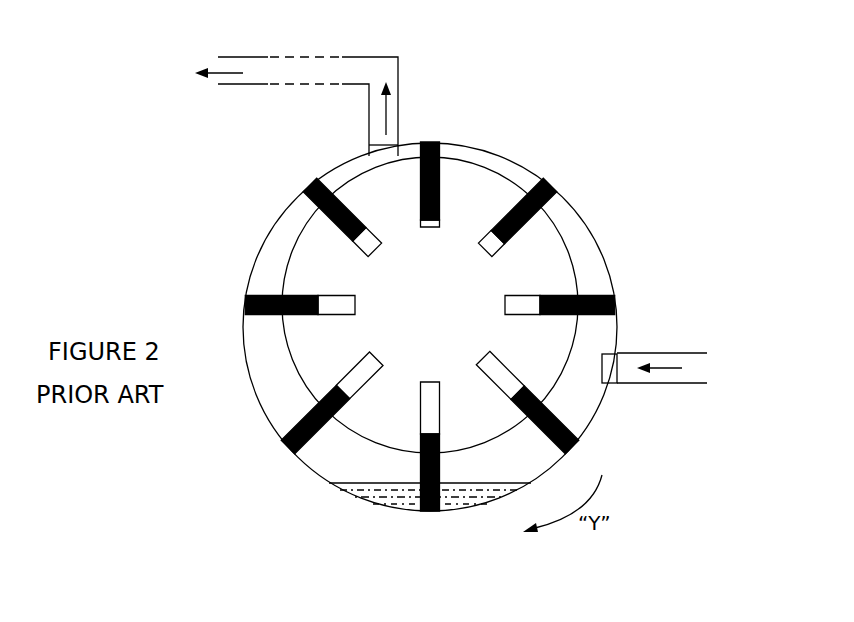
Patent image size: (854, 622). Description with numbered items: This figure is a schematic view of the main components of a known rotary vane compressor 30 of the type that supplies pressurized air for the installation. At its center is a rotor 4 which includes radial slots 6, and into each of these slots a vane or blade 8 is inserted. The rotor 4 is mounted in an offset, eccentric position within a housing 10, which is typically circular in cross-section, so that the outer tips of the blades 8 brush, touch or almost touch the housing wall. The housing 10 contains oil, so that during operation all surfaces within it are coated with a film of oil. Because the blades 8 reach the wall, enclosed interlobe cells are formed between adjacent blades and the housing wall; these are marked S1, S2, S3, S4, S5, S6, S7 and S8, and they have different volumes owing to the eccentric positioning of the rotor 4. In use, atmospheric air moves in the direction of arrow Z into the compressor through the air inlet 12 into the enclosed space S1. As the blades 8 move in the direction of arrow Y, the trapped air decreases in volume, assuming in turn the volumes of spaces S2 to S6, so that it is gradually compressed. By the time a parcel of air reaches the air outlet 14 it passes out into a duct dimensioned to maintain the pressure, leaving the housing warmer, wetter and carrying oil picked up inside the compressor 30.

The rotary vane compressor 30 is at (562, 88).
The rotor 4 is at (430, 305).
The radial slots 6 is at (363, 372).
The vanes 8 is at (567, 213).
The housing 10 is at (388, 487).
The air inlet 12 is at (682, 386).
The air outlet 14 is at (342, 57).
The enclosed space S1 is at (582, 381).
The enclosed space S2 is at (507, 461).
The enclosed space S3 is at (354, 455).
The enclosed space S4 is at (280, 373).
The enclosed space S5 is at (270, 271).
The enclosed space S6 is at (340, 168).
The enclosed space S7 is at (505, 163).
The enclosed space S8 is at (590, 271).